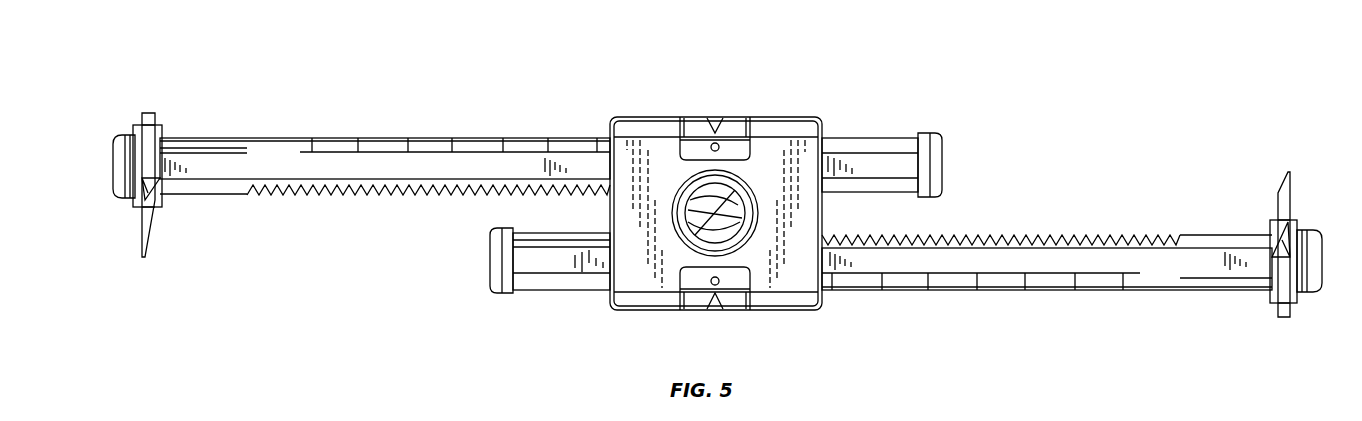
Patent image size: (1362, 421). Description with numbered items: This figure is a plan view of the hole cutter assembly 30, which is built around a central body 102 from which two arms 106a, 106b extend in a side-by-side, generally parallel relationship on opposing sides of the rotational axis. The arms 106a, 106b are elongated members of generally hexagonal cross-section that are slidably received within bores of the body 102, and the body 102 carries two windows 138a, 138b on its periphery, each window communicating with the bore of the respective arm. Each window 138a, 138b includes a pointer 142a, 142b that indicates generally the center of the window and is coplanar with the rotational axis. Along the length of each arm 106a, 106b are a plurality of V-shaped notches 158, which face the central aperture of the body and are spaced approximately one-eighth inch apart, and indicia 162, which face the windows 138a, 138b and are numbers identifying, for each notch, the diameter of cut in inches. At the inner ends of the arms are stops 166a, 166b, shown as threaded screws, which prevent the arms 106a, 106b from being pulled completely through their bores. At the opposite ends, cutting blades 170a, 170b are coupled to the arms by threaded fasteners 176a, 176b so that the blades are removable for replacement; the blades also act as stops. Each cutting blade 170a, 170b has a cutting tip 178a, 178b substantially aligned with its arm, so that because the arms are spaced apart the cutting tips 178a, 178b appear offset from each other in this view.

The hole cutter assembly 30 is at (1114, 73).
The body 102 is at (847, 74).
The arm 106a is at (1162, 260).
The arm 106b is at (268, 168).
The window 138a is at (706, 315).
The window 138b is at (726, 106).
The pointer 142a is at (717, 312).
The pointer 142b is at (713, 117).
The notches 158 is at (374, 206).
The indicia 162 is at (473, 110).
The stop 166a is at (493, 277).
The stop 166b is at (936, 143).
The cutting blade 170a is at (1271, 243).
The cutting blade 170b is at (170, 179).
The threaded fastener 176a is at (1317, 290).
The threaded fastener 176b is at (115, 137).
The cutting tip 178a is at (1287, 255).
The cutting tip 178b is at (155, 178).